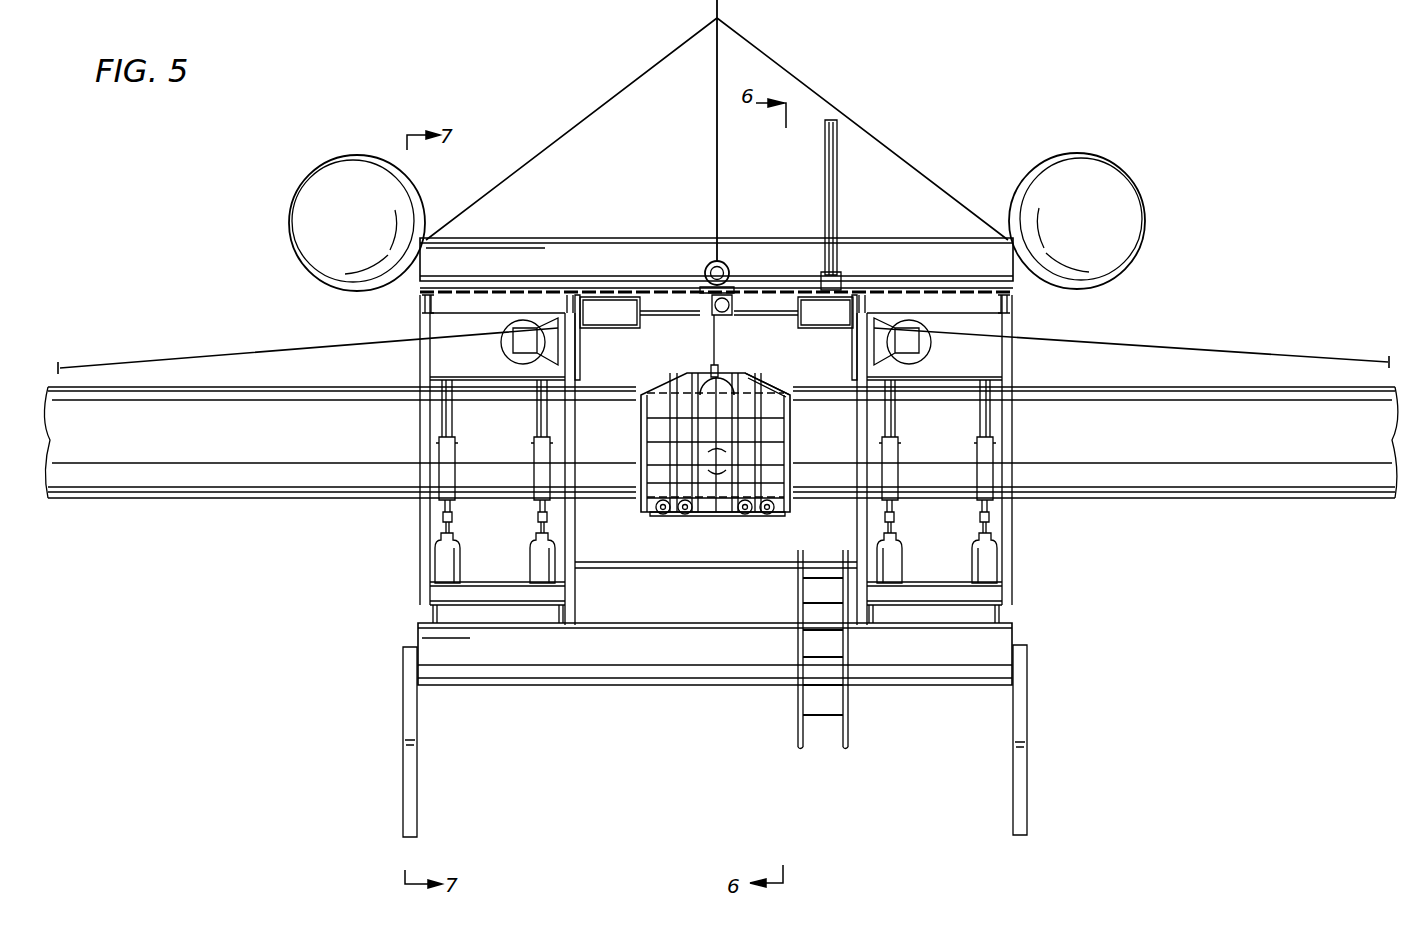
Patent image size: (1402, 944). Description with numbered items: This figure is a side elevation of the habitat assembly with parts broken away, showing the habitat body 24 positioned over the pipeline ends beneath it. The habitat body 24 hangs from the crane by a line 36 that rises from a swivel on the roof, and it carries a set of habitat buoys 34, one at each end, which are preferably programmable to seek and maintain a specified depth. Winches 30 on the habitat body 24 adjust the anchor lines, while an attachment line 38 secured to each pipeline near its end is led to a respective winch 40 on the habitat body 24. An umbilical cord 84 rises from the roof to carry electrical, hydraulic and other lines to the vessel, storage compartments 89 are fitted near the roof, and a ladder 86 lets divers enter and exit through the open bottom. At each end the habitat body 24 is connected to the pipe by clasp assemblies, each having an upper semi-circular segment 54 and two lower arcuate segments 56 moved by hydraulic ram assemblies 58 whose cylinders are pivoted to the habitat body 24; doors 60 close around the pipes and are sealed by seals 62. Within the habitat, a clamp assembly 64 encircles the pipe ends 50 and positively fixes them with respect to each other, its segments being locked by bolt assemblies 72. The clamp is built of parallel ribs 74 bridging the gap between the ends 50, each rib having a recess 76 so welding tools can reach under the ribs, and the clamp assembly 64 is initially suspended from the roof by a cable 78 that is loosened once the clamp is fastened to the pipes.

The habitat body 24 is at (885, 234).
The winches 30 is at (722, 3).
The habitat buoys 34 is at (310, 185).
The line 36 is at (716, 66).
The attachment line 38 is at (165, 358).
The winches 40 is at (503, 342).
The pipeline end 50 is at (792, 408).
The upper semi-circular segment 54 is at (437, 406).
The lower arcuate segments 56 is at (440, 472).
The hydraulic ram assembly 58 is at (460, 556).
The doors 60 is at (575, 343).
The seals 62 is at (578, 381).
The clamp assembly 64 is at (769, 379).
The bolt assemblies 72 is at (683, 516).
The ribs 74 is at (686, 377).
The recess 76 is at (723, 386).
The cable 78 is at (710, 324).
The umbilical cord 84 is at (838, 143).
The ladder 86 is at (850, 720).
The storage compartments 89 is at (613, 307).